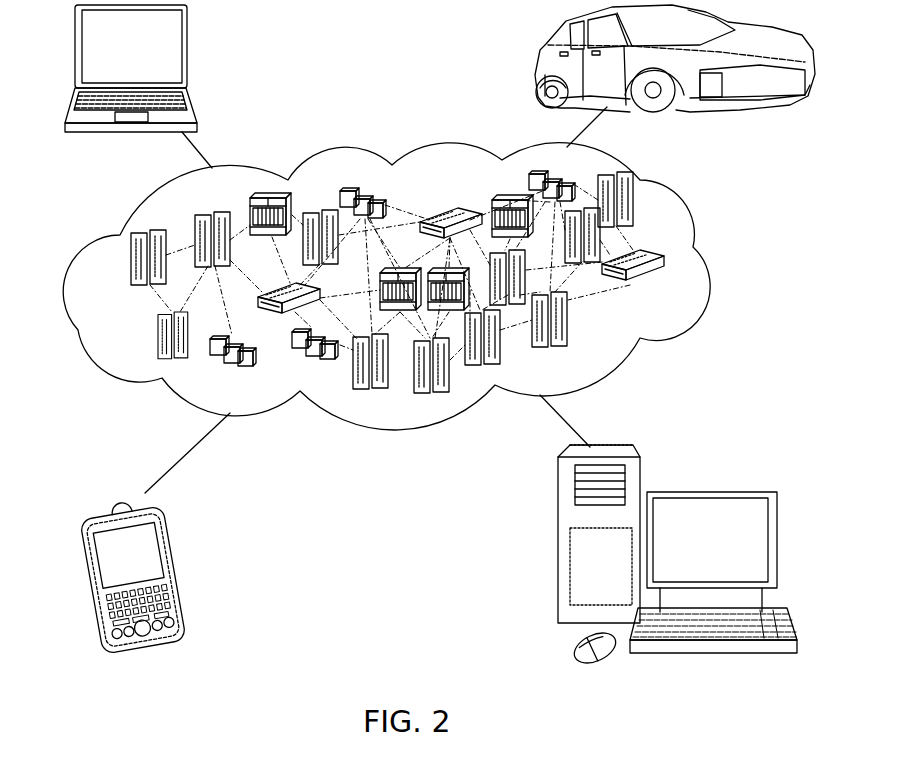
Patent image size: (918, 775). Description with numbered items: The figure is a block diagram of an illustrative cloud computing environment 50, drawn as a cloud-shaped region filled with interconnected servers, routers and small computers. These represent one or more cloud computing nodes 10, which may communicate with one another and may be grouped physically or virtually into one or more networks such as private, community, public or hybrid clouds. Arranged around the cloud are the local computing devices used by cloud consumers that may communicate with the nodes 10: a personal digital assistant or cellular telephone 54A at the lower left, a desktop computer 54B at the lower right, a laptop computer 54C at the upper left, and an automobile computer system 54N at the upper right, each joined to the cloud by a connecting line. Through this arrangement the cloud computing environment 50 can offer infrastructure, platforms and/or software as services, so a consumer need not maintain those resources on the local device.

The cloud computing nodes 10 is at (670, 292).
The cloud computing environment 50 is at (711, 266).
The personal digital assistant or cellular telephone 54A is at (178, 567).
The desktop computer 54B is at (709, 491).
The laptop computer 54C is at (186, 50).
The automobile computer system 54N is at (530, 65).